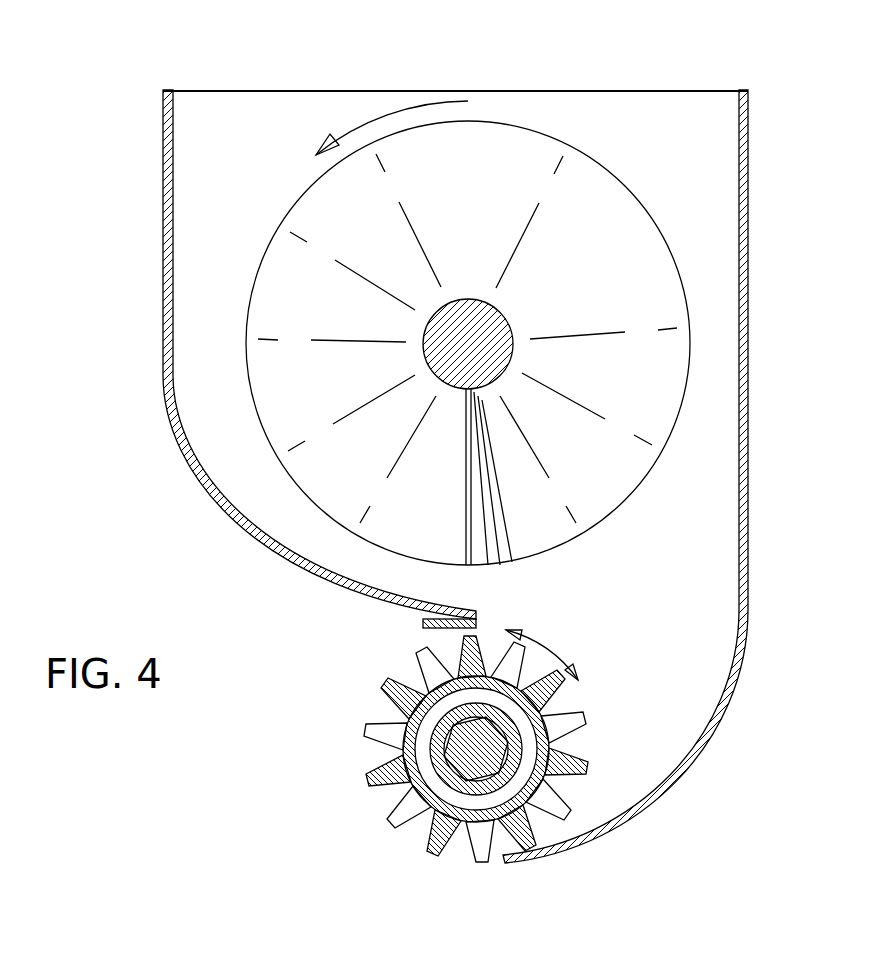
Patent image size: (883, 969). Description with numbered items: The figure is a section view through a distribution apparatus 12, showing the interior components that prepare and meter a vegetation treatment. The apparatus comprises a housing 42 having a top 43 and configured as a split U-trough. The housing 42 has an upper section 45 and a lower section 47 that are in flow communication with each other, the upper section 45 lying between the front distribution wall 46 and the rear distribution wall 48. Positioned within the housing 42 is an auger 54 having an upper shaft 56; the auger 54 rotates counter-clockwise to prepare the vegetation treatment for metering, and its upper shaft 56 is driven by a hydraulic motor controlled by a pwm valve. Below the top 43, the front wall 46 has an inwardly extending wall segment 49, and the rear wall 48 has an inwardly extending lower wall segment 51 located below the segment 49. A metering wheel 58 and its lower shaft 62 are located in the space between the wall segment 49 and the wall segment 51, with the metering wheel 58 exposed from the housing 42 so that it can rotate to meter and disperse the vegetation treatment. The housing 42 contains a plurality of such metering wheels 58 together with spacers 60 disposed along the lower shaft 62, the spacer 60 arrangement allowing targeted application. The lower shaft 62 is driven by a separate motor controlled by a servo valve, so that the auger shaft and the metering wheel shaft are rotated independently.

The distribution apparatus 12 is at (792, 121).
The housing 42 is at (580, 82).
The top 43 is at (216, 90).
The upper section 45 is at (702, 268).
The front distribution wall 46 is at (163, 268).
The lower section 47 is at (625, 777).
The rear distribution wall 48 is at (748, 366).
The wall segment 49 is at (452, 612).
The lower wall segment 51 is at (510, 863).
The auger 54 is at (600, 158).
The upper shaft 56 is at (497, 312).
The metering wheel 58 is at (392, 815).
The spacer 60 is at (580, 742).
The lower shaft 62 is at (463, 767).